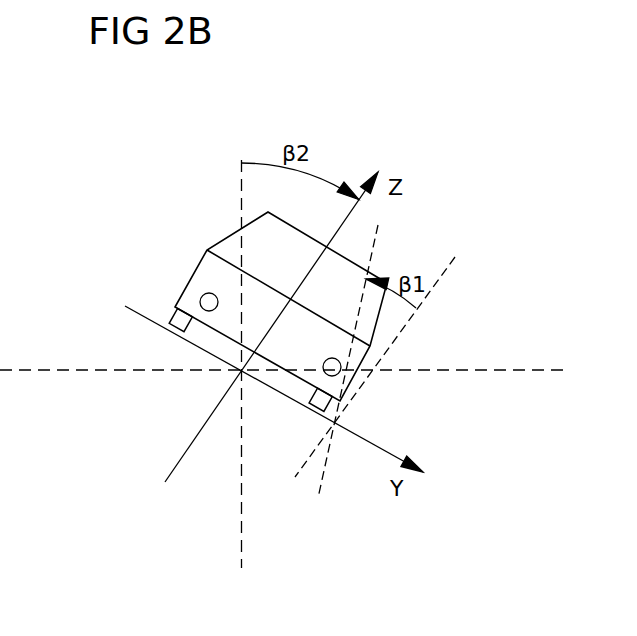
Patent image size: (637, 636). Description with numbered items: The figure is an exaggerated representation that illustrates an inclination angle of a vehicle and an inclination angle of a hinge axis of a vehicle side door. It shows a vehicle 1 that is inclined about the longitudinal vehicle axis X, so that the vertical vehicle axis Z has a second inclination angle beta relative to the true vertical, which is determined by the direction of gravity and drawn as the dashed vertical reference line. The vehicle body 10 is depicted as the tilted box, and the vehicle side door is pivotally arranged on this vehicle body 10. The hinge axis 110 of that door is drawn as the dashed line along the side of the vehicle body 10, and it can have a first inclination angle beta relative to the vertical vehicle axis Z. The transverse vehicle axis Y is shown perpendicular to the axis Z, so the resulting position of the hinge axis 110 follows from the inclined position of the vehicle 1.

The vehicle 1 is at (281, 309).
The vehicle body 10 is at (376, 274).
The hinge axis 110 is at (374, 245).